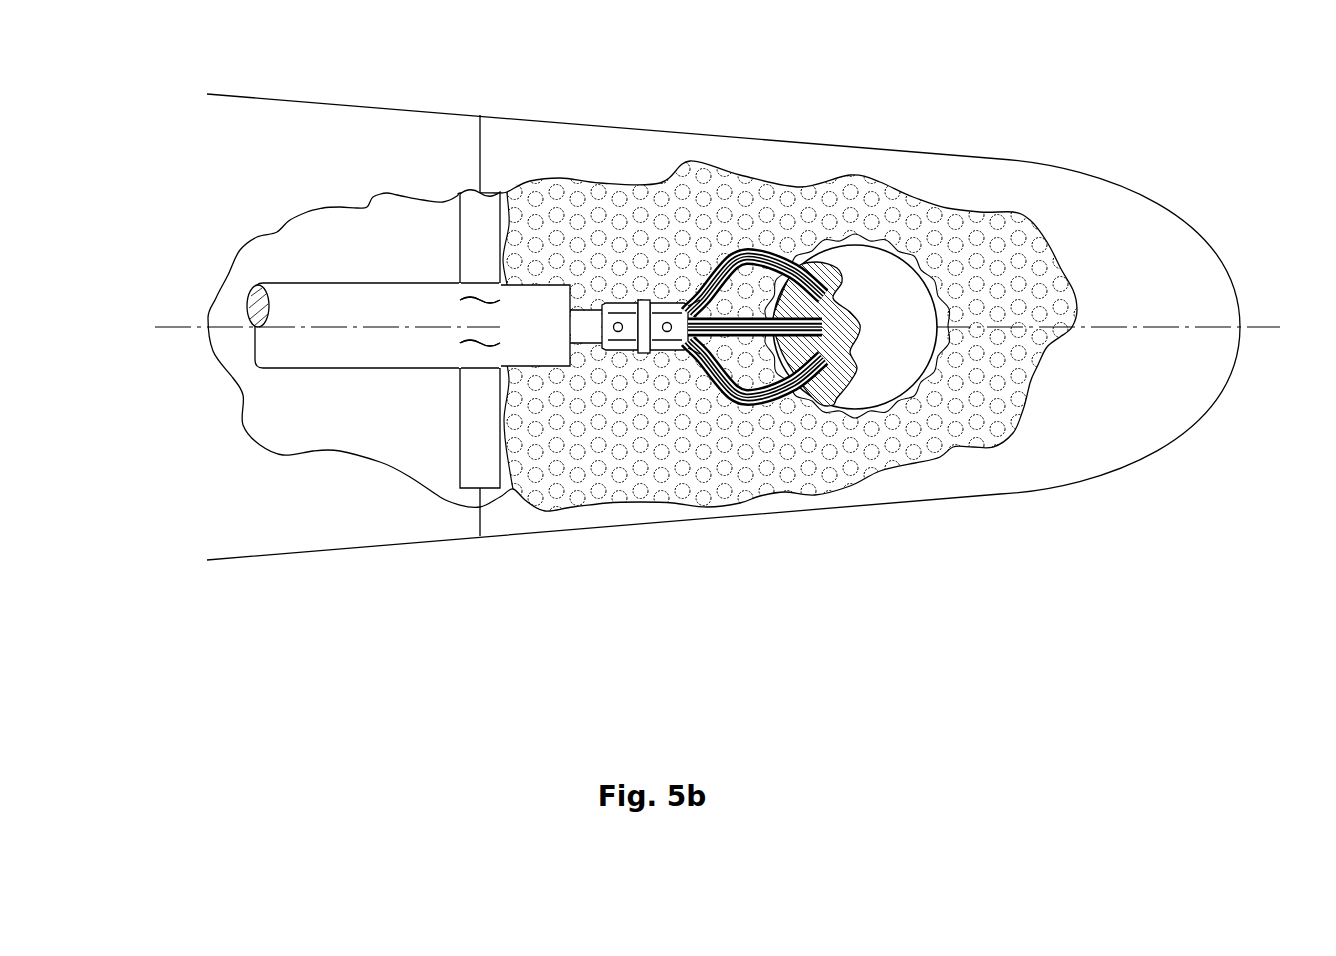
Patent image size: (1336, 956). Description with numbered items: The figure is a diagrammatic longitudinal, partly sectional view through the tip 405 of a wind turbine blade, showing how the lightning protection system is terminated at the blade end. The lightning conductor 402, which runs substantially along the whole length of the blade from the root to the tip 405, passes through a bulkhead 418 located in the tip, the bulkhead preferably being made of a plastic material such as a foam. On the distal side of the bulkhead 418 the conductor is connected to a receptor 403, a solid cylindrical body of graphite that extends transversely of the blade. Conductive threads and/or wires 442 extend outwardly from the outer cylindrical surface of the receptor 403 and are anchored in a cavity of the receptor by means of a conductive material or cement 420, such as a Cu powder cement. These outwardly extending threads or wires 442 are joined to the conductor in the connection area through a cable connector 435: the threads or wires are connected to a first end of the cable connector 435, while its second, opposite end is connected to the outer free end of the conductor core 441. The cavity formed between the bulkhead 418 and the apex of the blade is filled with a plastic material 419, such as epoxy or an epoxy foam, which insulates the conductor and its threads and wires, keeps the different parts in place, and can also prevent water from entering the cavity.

The lightning conductor 402 is at (277, 350).
The receptor 403 is at (900, 295).
The tip 405 is at (1146, 242).
The bulkhead 418 is at (472, 447).
The plastic material 419 is at (547, 493).
The conductive material or cement 420 is at (815, 262).
The cable connector 435 is at (627, 303).
The conductor core 441 is at (585, 335).
The conductive threads and/or wires 442 is at (675, 352).